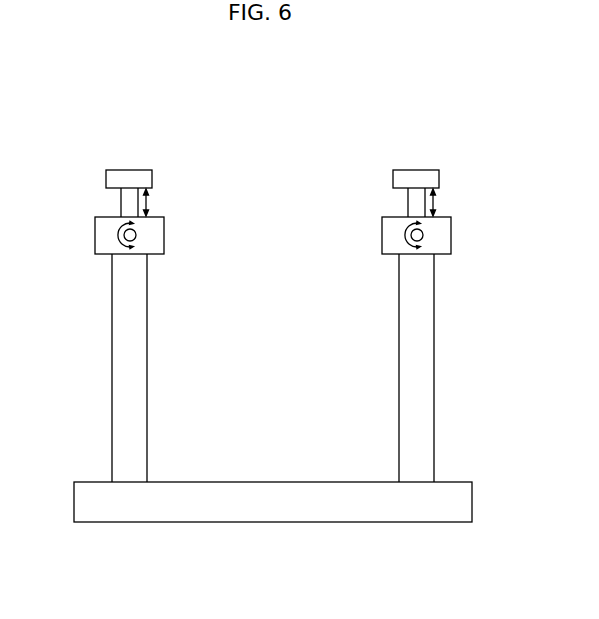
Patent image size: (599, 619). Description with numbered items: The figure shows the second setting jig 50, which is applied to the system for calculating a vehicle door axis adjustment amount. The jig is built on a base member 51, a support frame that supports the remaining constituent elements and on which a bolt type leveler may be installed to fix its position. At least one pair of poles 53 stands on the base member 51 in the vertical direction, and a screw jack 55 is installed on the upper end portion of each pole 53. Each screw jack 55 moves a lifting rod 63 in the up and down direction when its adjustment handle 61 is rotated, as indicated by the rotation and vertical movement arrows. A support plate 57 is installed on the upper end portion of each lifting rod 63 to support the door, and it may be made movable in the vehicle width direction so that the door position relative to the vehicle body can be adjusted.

The second setting jig 50 is at (280, 108).
The base member 51 is at (271, 492).
The pole 53 is at (118, 320).
The screw jack 55 is at (95, 237).
The support plate 57 is at (127, 172).
The adjustment handle 61 is at (136, 234).
The lifting rod 63 is at (126, 207).